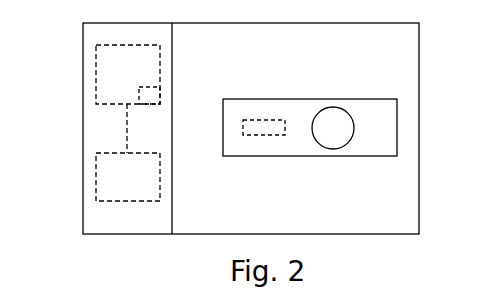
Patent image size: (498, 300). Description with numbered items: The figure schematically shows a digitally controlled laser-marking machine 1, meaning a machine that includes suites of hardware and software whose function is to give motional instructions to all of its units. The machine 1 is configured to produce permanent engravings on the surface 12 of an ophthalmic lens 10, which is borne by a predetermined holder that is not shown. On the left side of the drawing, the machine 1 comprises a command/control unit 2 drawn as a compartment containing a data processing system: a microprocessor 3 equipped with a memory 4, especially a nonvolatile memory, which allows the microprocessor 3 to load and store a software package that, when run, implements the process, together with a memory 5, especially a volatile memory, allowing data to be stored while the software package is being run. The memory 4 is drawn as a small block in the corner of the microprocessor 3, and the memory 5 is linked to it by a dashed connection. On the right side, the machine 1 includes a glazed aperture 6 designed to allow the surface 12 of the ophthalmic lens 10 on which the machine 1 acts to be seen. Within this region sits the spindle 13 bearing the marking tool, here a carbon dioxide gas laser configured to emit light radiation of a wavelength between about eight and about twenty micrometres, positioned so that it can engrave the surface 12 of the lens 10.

The laser-marking machine 1 is at (419, 64).
The command/control unit 2 is at (101, 221).
The microprocessor 3 is at (96, 77).
The memory 4 is at (152, 100).
The memory 5 is at (97, 162).
The glazed aperture 6 is at (388, 133).
The ophthalmic lens 10 is at (343, 150).
The surface 12 is at (324, 137).
The spindle 13 is at (267, 119).